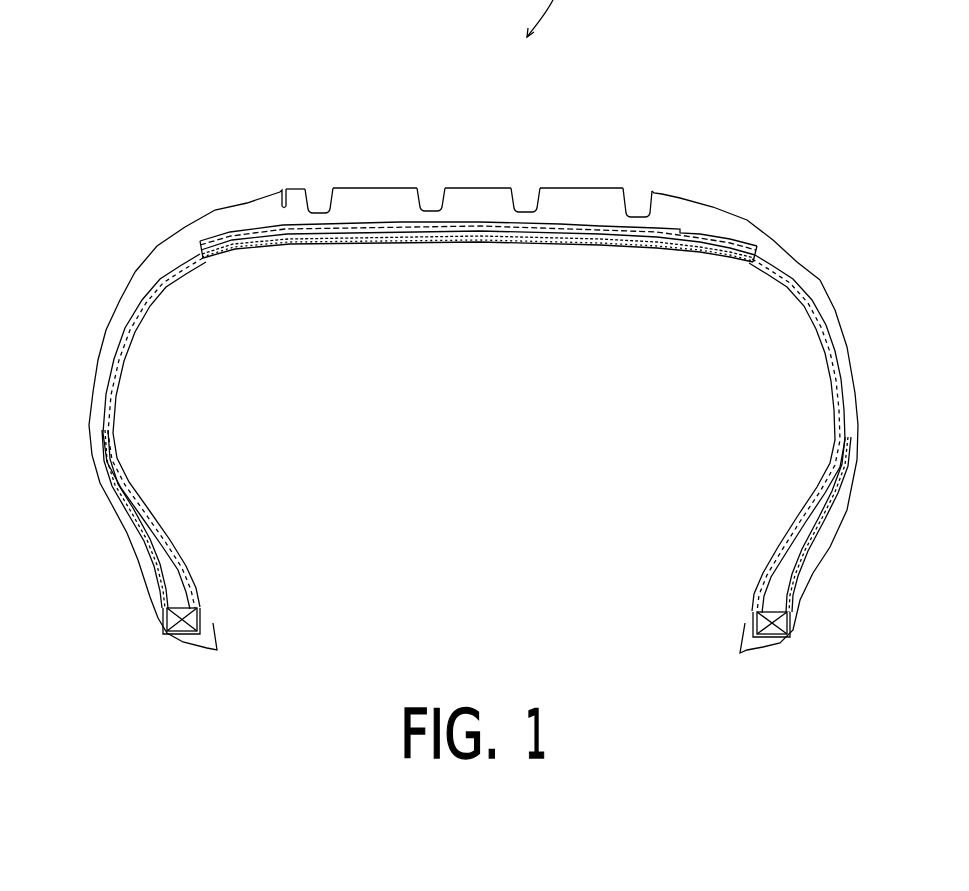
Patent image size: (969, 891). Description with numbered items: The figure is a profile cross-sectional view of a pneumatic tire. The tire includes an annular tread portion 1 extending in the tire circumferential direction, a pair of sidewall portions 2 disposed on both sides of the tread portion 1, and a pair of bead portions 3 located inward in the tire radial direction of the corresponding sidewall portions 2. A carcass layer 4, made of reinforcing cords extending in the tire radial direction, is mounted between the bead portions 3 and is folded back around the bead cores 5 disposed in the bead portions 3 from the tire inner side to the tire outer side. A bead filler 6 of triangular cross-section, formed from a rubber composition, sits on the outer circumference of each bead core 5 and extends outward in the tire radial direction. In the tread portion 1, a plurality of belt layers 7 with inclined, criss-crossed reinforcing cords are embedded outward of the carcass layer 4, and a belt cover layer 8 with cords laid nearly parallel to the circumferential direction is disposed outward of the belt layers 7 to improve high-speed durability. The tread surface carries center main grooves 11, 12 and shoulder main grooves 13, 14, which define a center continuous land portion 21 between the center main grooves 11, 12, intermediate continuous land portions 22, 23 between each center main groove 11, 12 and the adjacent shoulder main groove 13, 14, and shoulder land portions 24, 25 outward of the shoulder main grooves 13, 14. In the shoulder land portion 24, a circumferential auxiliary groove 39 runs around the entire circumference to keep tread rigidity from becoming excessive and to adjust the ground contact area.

The tread portion 1 is at (472, 354).
The sidewall portion 2 is at (103, 350).
The bead portion 3 is at (152, 605).
The carcass layer 4 is at (789, 290).
The bead core 5 is at (190, 618).
The bead filler 6 is at (177, 575).
The belt layer 7 is at (624, 247).
The belt cover layer 8 is at (262, 228).
The center main groove 11 is at (424, 197).
The center main groove 12 is at (517, 197).
The shoulder main groove 13 is at (309, 208).
The shoulder main groove 14 is at (632, 199).
The center continuous land portion 21 is at (485, 197).
The intermediate continuous land portion 22 is at (372, 196).
The intermediate continuous land portion 23 is at (578, 197).
The shoulder land portion 24 is at (243, 207).
The shoulder land portion 25 is at (736, 213).
The circumferential auxiliary groove 39 is at (285, 197).